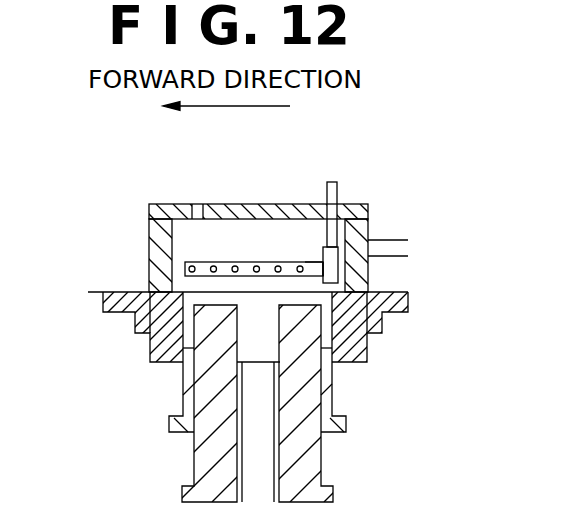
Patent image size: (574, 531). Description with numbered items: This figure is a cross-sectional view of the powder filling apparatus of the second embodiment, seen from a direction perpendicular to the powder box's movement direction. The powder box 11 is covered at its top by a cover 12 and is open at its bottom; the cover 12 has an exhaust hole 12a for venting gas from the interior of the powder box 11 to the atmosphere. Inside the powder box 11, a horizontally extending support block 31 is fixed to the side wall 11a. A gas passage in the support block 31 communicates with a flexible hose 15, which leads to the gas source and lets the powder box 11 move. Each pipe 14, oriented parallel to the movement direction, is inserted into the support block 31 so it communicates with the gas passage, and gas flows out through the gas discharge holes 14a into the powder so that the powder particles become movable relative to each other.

The powder box 11 is at (150, 245).
The side wall 11a is at (360, 231).
The cover 12 is at (170, 212).
The exhaust hole 12a is at (198, 214).
The pipe 14 is at (198, 278).
The gas discharge holes 14a is at (306, 278).
The flexible hose 15 is at (337, 190).
The support block 31 is at (335, 278).